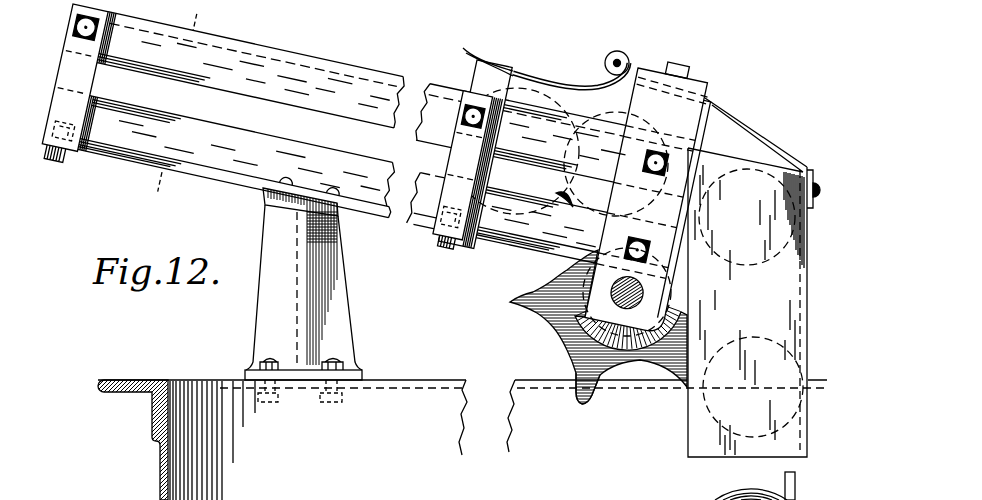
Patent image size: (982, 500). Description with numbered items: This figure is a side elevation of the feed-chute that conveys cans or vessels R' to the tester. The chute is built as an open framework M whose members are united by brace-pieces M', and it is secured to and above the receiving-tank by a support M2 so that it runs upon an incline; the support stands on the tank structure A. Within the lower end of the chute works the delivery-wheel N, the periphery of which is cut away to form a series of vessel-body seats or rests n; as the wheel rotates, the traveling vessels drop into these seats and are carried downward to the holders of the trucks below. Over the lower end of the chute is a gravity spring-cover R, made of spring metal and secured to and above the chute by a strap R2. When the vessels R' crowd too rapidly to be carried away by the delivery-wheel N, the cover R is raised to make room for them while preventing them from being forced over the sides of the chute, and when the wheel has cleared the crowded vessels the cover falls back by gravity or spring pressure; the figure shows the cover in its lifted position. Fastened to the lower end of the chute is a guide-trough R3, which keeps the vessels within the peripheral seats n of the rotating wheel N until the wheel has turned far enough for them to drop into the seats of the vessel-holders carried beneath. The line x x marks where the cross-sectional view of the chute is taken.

The open framework M is at (249, 115).
The brace-pieces M' is at (265, 127).
The support M2 is at (340, 301).
The bed frame A is at (413, 435).
The gravity spring-cover R is at (546, 65).
The cans or vessels R' is at (533, 193).
The strap R2 is at (651, 194).
The guide-trough R3 is at (754, 277).
The delivery-wheel N is at (550, 305).
The vessel-body seats or rests n is at (650, 358).
The section line x is at (175, 103).